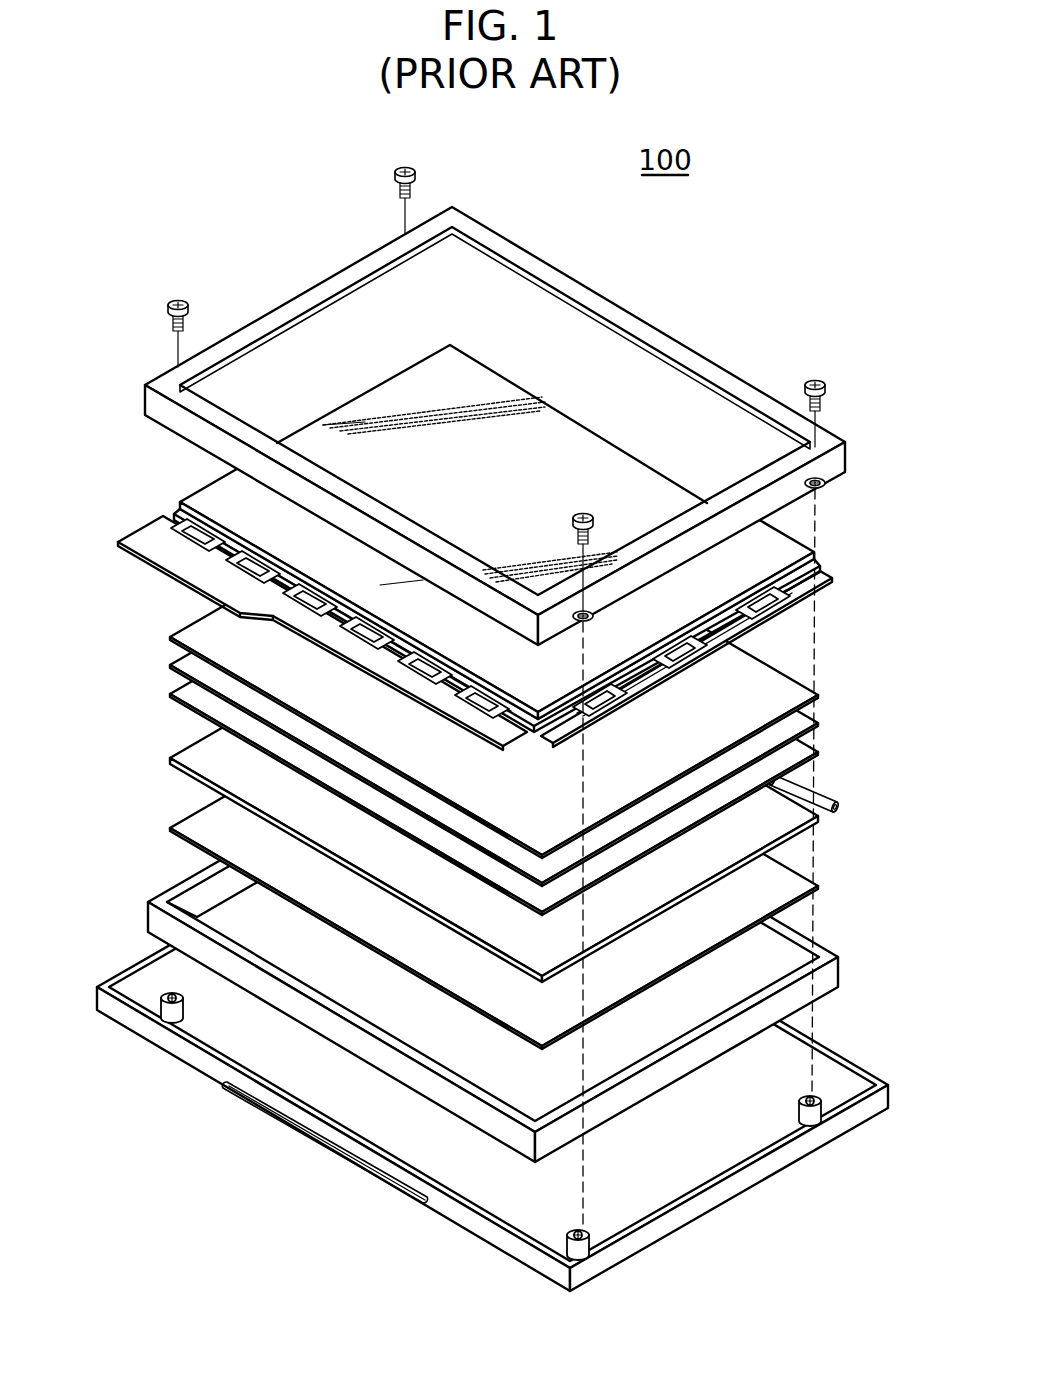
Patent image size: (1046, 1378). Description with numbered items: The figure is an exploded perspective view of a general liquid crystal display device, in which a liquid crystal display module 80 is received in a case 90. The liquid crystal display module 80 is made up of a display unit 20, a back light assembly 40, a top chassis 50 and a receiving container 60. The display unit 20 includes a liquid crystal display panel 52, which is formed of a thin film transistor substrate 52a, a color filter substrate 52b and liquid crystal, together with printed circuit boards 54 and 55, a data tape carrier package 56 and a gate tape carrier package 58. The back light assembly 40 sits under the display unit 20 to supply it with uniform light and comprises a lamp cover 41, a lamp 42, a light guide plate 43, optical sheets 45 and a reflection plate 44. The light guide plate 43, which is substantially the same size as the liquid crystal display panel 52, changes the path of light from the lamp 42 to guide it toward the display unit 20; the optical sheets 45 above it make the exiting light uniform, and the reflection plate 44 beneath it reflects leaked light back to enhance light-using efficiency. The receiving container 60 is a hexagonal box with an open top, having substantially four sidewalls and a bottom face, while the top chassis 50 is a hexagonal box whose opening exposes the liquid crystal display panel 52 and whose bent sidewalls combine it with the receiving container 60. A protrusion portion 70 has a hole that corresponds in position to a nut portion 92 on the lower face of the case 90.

The display unit 20 is at (495, 546).
The back light assembly 40 is at (469, 763).
The lamp cover 41 is at (825, 803).
The lamp 42 is at (838, 808).
The light guide plate 43 is at (750, 858).
The reflection plate 44 is at (190, 755).
The optical sheets 45 is at (105, 930).
The top chassis 50 is at (528, 407).
The liquid crystal display panel 52 is at (539, 537).
The thin film transistor substrate 52a is at (797, 588).
The color filter substrate 52b is at (813, 562).
The printed circuit board 54 is at (212, 583).
The printed circuit board 55 is at (840, 587).
The data tape carrier package 56 is at (195, 537).
The gate tape carrier package 58 is at (760, 612).
The receiving container 60 is at (832, 975).
The protrusion portion 70 is at (828, 483).
The liquid crystal display module 80 is at (906, 445).
The case 90 is at (605, 1262).
The nut portion 92 is at (818, 1106).